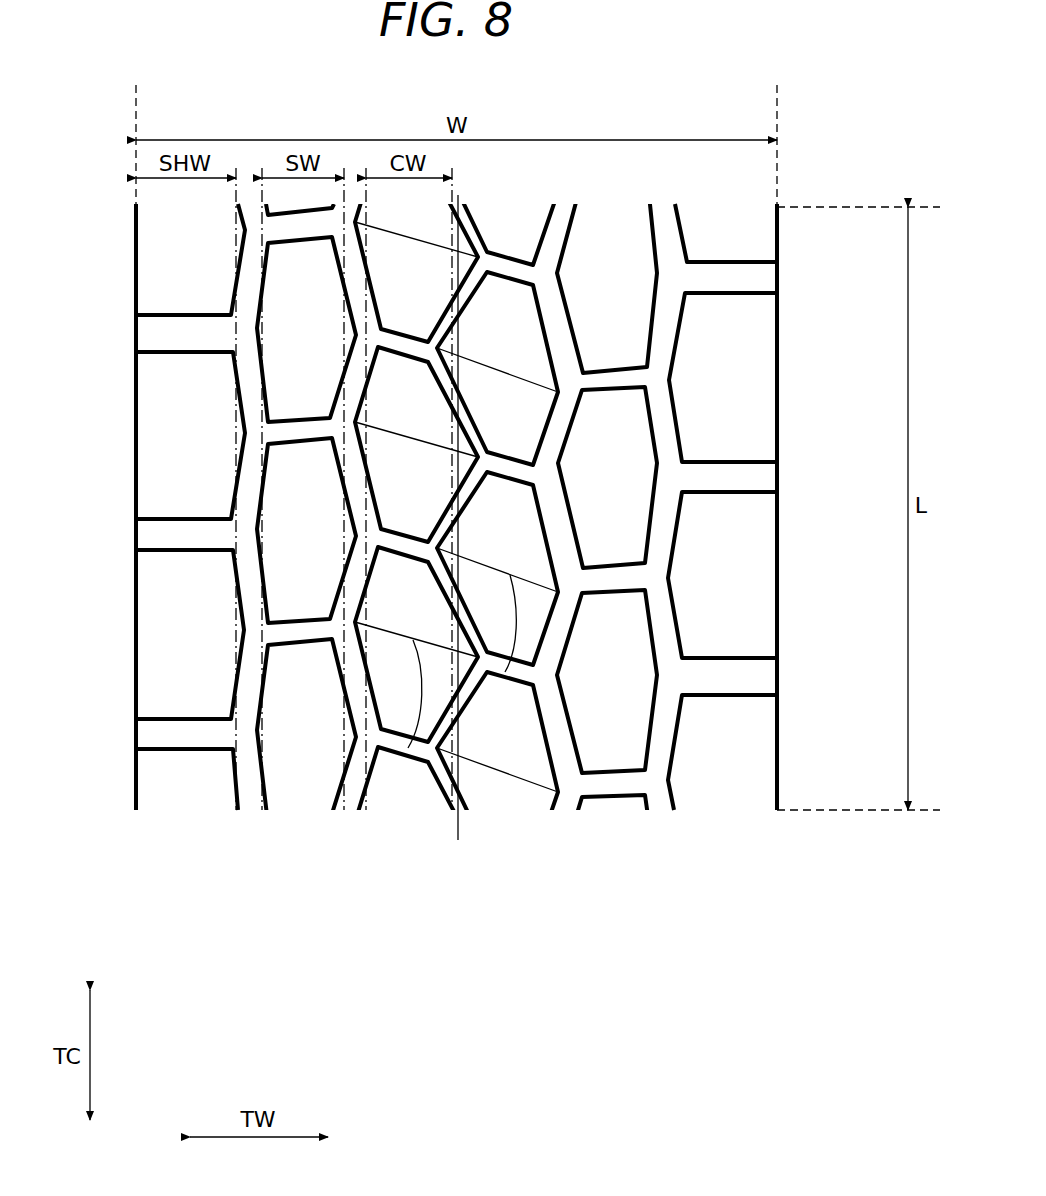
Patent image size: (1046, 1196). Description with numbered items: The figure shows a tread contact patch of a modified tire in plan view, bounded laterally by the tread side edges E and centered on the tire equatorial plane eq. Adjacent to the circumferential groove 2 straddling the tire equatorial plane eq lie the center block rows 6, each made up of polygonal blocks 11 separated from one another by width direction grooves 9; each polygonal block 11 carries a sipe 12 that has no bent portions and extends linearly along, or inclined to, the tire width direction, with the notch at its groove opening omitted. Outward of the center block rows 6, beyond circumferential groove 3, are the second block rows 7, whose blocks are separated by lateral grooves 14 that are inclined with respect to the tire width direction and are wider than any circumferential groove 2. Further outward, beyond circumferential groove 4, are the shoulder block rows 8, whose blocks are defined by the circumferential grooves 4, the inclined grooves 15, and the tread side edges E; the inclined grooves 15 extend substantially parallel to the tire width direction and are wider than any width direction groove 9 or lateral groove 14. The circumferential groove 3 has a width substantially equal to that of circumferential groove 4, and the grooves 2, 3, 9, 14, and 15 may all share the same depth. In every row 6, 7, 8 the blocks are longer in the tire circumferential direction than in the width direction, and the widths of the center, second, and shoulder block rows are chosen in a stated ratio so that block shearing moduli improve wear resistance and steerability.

The circumferential groove 2 is at (447, 783).
The circumferential groove 3 is at (347, 807).
The circumferential groove 4 is at (250, 807).
The center block row 6 is at (457, 507).
The second block row 7 is at (457, 575).
The shoulder block row 8 is at (461, 572).
The width direction groove 9 is at (403, 543).
The polygonal block 11 is at (390, 403).
The sipe 12 is at (408, 748).
The lateral groove 14 is at (297, 633).
The inclined groove 15 is at (160, 537).
The tread side edge E is at (136, 395).
The tire equatorial plane eq is at (458, 533).